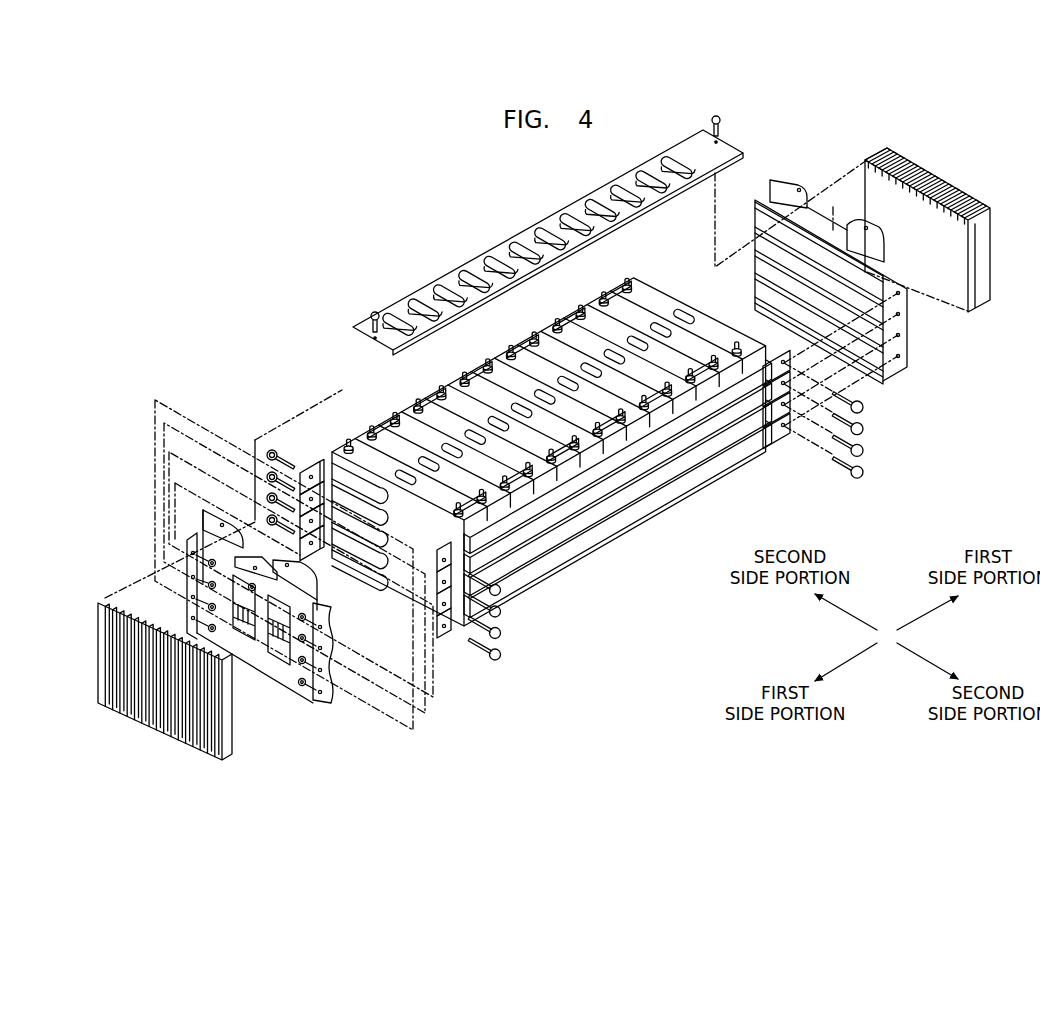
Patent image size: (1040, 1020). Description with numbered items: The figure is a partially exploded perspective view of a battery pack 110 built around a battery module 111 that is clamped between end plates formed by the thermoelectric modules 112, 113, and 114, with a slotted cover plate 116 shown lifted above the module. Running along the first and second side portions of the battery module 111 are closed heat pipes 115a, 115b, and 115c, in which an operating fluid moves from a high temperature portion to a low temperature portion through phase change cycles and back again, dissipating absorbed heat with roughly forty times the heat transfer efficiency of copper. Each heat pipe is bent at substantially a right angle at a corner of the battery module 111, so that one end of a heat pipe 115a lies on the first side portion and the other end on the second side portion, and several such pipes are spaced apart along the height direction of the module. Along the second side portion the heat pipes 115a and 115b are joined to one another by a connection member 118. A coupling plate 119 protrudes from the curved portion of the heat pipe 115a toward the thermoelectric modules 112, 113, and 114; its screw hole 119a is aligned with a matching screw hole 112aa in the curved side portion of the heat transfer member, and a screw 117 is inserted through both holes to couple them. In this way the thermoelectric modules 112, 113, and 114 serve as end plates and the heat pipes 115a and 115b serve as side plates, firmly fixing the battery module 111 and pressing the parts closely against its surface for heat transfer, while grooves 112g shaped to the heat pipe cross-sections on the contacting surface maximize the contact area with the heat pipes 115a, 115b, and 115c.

The battery pack 110 is at (708, 703).
The battery module 111 is at (679, 281).
The thermoelectric module 112 is at (292, 675).
The screw hole 112aa is at (321, 694).
The grooves 112g is at (333, 619).
The thermoelectric module 113 is at (276, 660).
The thermoelectric module 114 is at (206, 749).
The heat pipe 115a is at (530, 570).
The heat pipe 115b is at (678, 490).
The heat pipe 115c is at (325, 470).
The top cover plate 116 is at (695, 148).
The screw 117 is at (470, 640).
The connection member 118 is at (610, 527).
The coupling plate 119 is at (455, 633).
The screw hole 119a is at (442, 640).